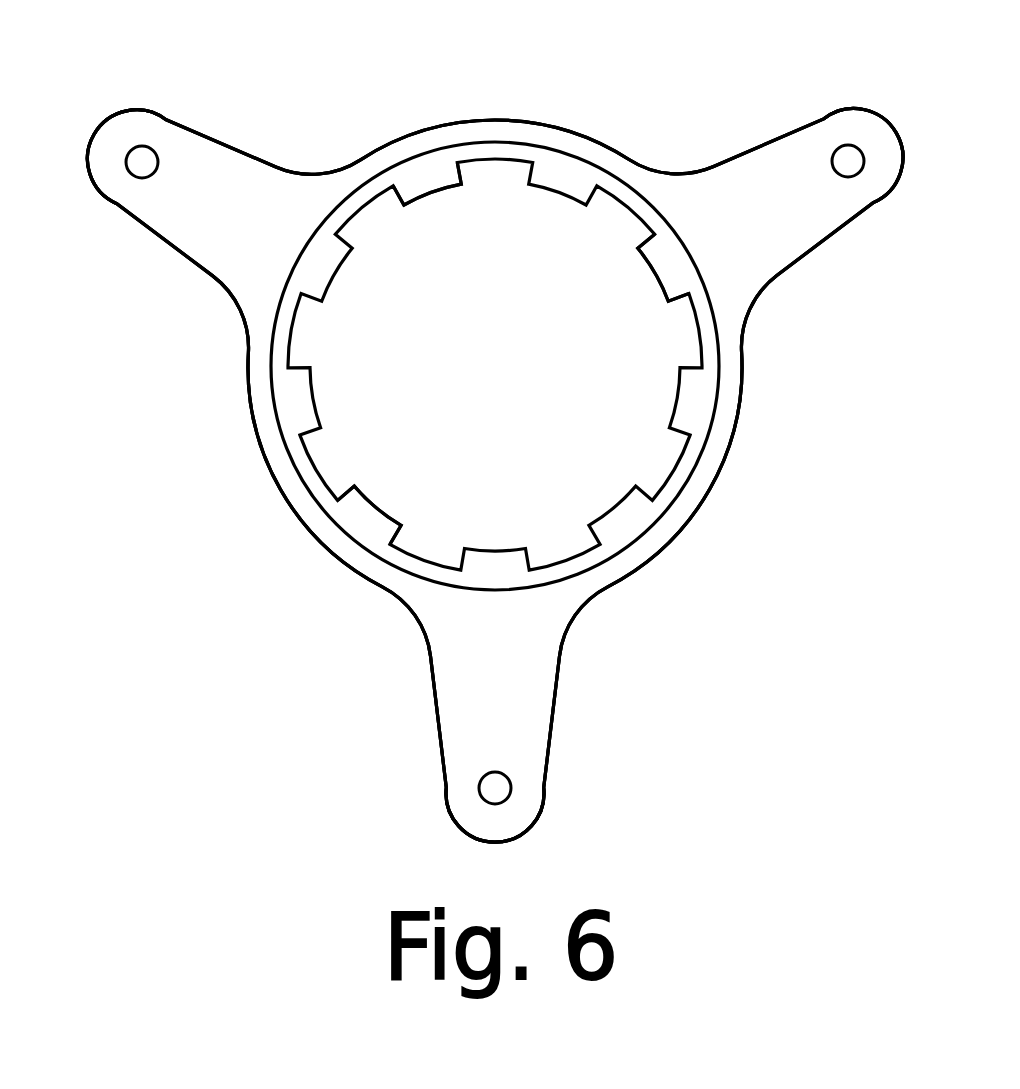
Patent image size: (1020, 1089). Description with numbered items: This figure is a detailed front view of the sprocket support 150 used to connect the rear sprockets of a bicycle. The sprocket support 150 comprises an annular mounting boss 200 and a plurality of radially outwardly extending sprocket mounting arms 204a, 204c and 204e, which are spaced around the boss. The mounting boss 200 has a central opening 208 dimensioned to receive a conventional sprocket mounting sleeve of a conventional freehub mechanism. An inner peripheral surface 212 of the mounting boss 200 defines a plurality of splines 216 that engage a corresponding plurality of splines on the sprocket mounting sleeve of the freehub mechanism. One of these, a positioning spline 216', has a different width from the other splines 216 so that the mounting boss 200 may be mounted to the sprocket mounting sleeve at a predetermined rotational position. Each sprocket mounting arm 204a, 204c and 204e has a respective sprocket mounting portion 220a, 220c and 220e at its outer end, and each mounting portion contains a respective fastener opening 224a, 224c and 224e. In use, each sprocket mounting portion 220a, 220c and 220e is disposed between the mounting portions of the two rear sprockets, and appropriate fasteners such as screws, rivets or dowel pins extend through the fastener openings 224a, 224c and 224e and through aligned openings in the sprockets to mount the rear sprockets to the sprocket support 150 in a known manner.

The sprocket support 150 is at (293, 114).
The annular mounting boss 200 is at (696, 516).
The sprocket mounting arm 204a is at (473, 693).
The sprocket mounting arm 204c is at (194, 213).
The sprocket mounting arm 204e is at (731, 218).
The central opening 208 is at (470, 365).
The inner peripheral surface 212 is at (423, 198).
The splines 216 is at (622, 273).
The positioning spline 216' is at (398, 511).
The sprocket mounting portion 220a is at (447, 794).
The sprocket mounting portion 220c is at (136, 219).
The sprocket mounting portion 220e is at (851, 220).
The fastener opening 224a is at (511, 789).
The fastener opening 224c is at (146, 147).
The fastener opening 224e is at (841, 147).